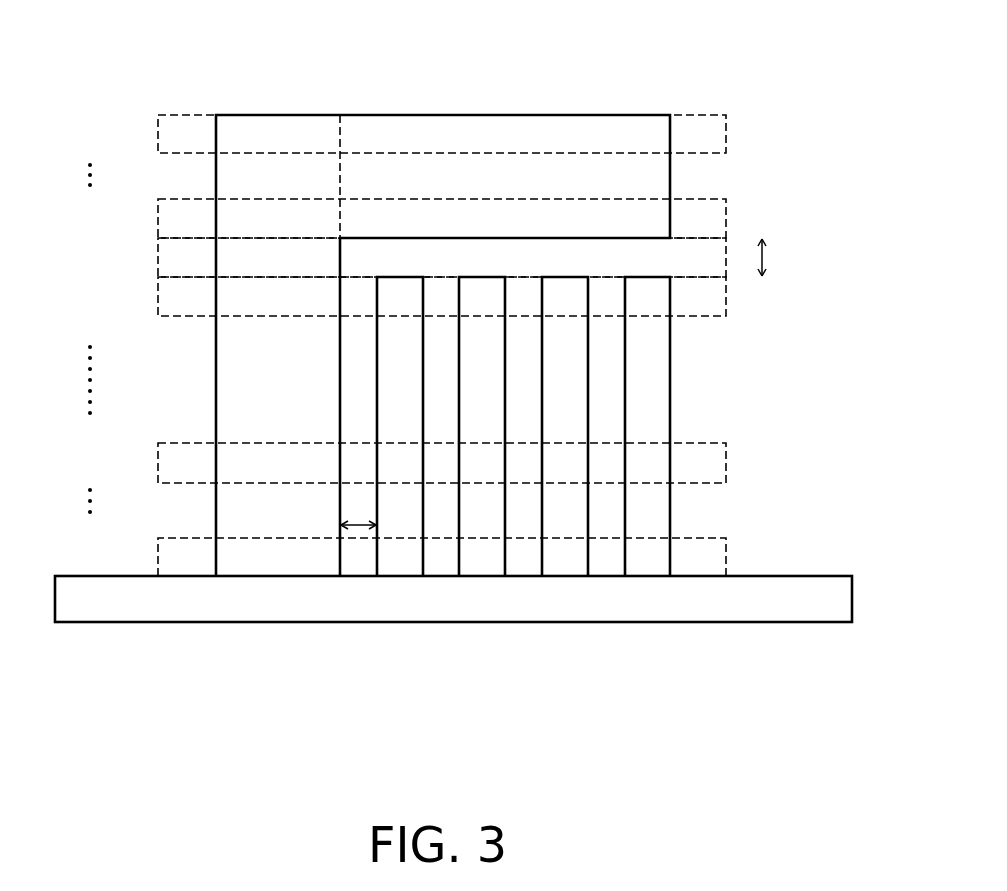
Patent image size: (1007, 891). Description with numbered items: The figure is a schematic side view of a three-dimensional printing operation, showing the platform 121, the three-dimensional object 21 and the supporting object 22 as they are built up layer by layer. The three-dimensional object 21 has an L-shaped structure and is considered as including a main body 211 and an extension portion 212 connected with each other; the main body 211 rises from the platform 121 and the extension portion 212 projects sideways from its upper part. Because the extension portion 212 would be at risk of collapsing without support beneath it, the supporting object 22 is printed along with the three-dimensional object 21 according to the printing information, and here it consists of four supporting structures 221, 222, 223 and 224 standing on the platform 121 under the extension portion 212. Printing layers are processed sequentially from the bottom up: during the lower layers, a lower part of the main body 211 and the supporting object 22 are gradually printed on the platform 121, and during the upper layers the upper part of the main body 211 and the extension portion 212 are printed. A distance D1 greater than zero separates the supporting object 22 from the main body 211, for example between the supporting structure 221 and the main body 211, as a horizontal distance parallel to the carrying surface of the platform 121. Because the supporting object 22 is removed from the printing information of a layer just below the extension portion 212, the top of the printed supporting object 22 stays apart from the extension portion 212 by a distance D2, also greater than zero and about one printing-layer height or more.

The 3-D object 21 is at (420, 55).
The main body 211 is at (287, 113).
The extension portion 212 is at (405, 113).
The supporting object 22 is at (383, 678).
The supporting structure 221 is at (402, 563).
The supporting structure 222 is at (485, 563).
The supporting structure 223 is at (568, 563).
The supporting structure 224 is at (652, 563).
The platform 121 is at (778, 605).
The distance D1 is at (358, 509).
The distance D2 is at (779, 258).